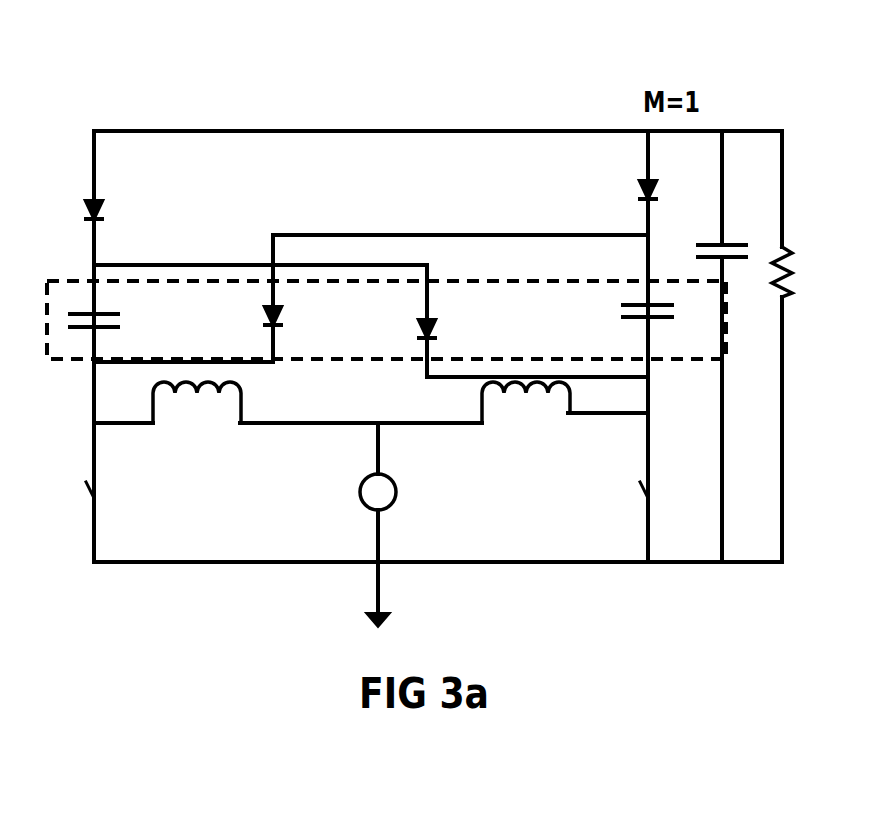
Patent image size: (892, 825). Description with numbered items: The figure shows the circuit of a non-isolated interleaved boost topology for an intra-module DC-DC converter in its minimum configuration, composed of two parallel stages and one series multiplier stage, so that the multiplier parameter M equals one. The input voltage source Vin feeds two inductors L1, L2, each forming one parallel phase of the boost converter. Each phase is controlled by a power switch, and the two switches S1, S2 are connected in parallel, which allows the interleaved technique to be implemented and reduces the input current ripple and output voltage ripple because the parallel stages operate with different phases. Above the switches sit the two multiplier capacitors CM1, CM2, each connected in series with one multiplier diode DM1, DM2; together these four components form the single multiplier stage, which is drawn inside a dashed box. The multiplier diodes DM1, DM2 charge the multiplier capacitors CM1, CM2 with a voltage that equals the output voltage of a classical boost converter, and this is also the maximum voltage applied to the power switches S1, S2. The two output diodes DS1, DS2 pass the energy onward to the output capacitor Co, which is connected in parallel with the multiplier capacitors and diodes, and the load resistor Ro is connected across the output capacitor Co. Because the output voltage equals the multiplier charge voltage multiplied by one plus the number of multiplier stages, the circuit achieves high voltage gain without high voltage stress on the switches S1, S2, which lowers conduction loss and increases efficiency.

The output diode DS1 is at (112, 210).
The output diode DS2 is at (667, 190).
The multiplier diode DM1 is at (296, 316).
The multiplier diode DM2 is at (448, 329).
The multiplier capacitor CM1 is at (115, 324).
The multiplier capacitor CM2 is at (668, 315).
The output capacitor Co is at (734, 255).
The output load resistor Ro is at (795, 272).
The inductor L1 is at (179, 402).
The inductor L2 is at (507, 402).
The switch S1 is at (105, 490).
The switch S2 is at (631, 490).
The input voltage source Vin is at (363, 525).